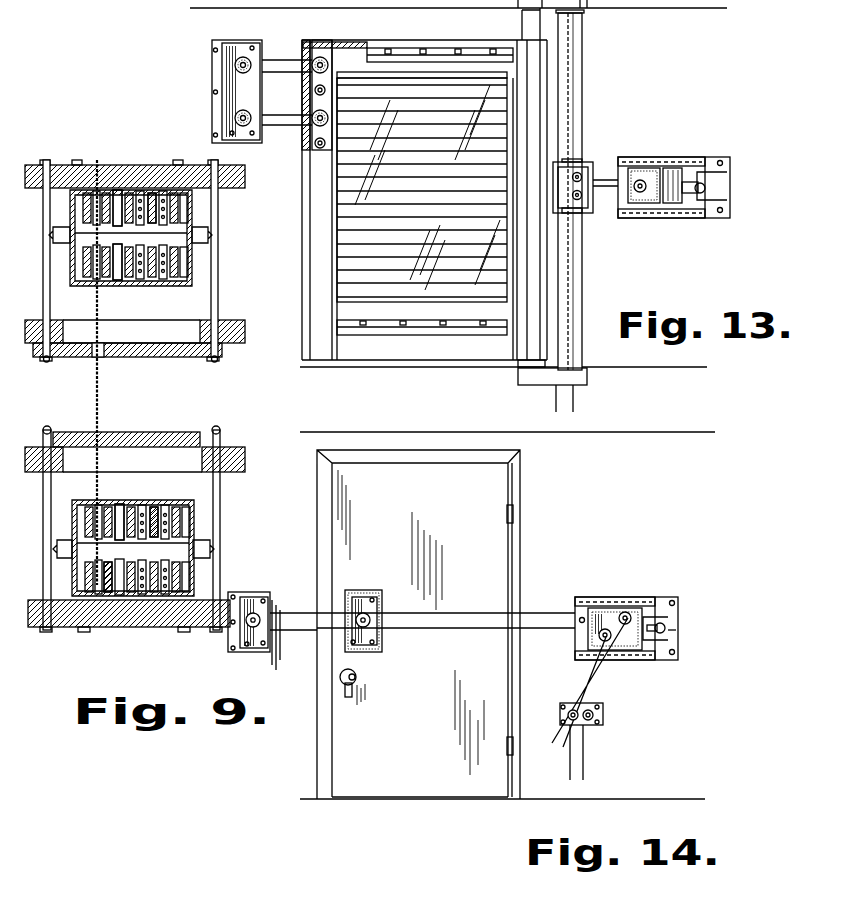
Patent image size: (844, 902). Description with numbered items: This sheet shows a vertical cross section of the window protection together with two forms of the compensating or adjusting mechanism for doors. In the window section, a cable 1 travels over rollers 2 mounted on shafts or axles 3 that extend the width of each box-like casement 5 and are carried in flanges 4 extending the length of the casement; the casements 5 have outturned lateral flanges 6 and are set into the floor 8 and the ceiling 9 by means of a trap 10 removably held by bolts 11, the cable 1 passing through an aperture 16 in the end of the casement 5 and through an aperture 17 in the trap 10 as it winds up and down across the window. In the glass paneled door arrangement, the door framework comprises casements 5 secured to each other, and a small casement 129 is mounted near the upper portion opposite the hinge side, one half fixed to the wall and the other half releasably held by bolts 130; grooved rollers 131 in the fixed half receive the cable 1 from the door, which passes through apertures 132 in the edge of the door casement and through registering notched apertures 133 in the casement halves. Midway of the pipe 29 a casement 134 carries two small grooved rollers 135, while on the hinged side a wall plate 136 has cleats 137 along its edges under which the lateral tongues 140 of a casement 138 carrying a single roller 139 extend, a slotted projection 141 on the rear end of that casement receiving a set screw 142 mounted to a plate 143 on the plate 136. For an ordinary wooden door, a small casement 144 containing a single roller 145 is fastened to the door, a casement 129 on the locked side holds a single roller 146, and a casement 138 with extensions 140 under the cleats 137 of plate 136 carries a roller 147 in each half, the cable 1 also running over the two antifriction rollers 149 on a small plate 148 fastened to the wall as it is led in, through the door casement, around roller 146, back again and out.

In FIG. 9, the cable 1 is at (100, 407).
In FIG. 13, the cable 1 is at (278, 58).
In FIG. 14, the cable 1 is at (484, 590).
In FIG. 9, the rollers 2 is at (118, 190).
In FIG. 9, the shafts or axles 3 is at (180, 187).
In FIG. 9, the flanges 4 is at (178, 218).
In FIG. 9, the casements 5 is at (70, 279).
In FIG. 13, the casements 5 is at (413, 42).
In FIG. 9, the lateral flanges 6 is at (55, 236).
In FIG. 9, the floor 8 is at (33, 446).
In FIG. 9, the ceiling 9 is at (34, 347).
In FIG. 9, the trap 10 is at (178, 350).
In FIG. 9, the bolts 11 is at (218, 277).
In FIG. 9, the aperture 16 is at (141, 280).
In FIG. 9, the aperture 17 is at (100, 352).
In FIG. 13, the pipe 29 is at (582, 294).
In FIG. 9, the small casement 129 is at (232, 640).
In FIG. 13, the small casement 129 is at (215, 53).
In FIG. 13, the bolts 130 is at (215, 136).
In FIG. 13, the grooved rollers 131 is at (236, 72).
In FIG. 13, the apertures 132 is at (310, 108).
In FIG. 13, the apertures 133 is at (262, 56).
In FIG. 13, the casement 134 is at (593, 208).
In FIG. 13, the grooved rollers 135 is at (578, 192).
In FIG. 13, the plate 136 is at (730, 160).
In FIG. 14, the plate 136 is at (678, 608).
In FIG. 13, the cleats 137 is at (696, 160).
In FIG. 14, the cleats 137 is at (655, 597).
In FIG. 13, the casement 138 is at (645, 203).
In FIG. 13, the roller 139 is at (642, 180).
In FIG. 13, the lateral tongues 140 is at (672, 168).
In FIG. 14, the lateral tongues 140 is at (630, 608).
In FIG. 13, the slotted projection 141 is at (690, 193).
In FIG. 14, the slotted projection 141 is at (678, 643).
In FIG. 13, the set screw 142 is at (706, 186).
In FIG. 14, the set screw 142 is at (668, 630).
In FIG. 13, the plate 143 is at (724, 188).
In FIG. 14, the plate 143 is at (670, 638).
In FIG. 14, the small casement 144 is at (378, 648).
In FIG. 14, the roller 145 is at (380, 613).
In FIG. 9, the roller 146 is at (240, 594).
In FIG. 14, the roller 147 is at (618, 612).
In FIG. 14, the small plate 148 is at (597, 724).
In FIG. 14, the antifriction rollers 149 is at (557, 740).